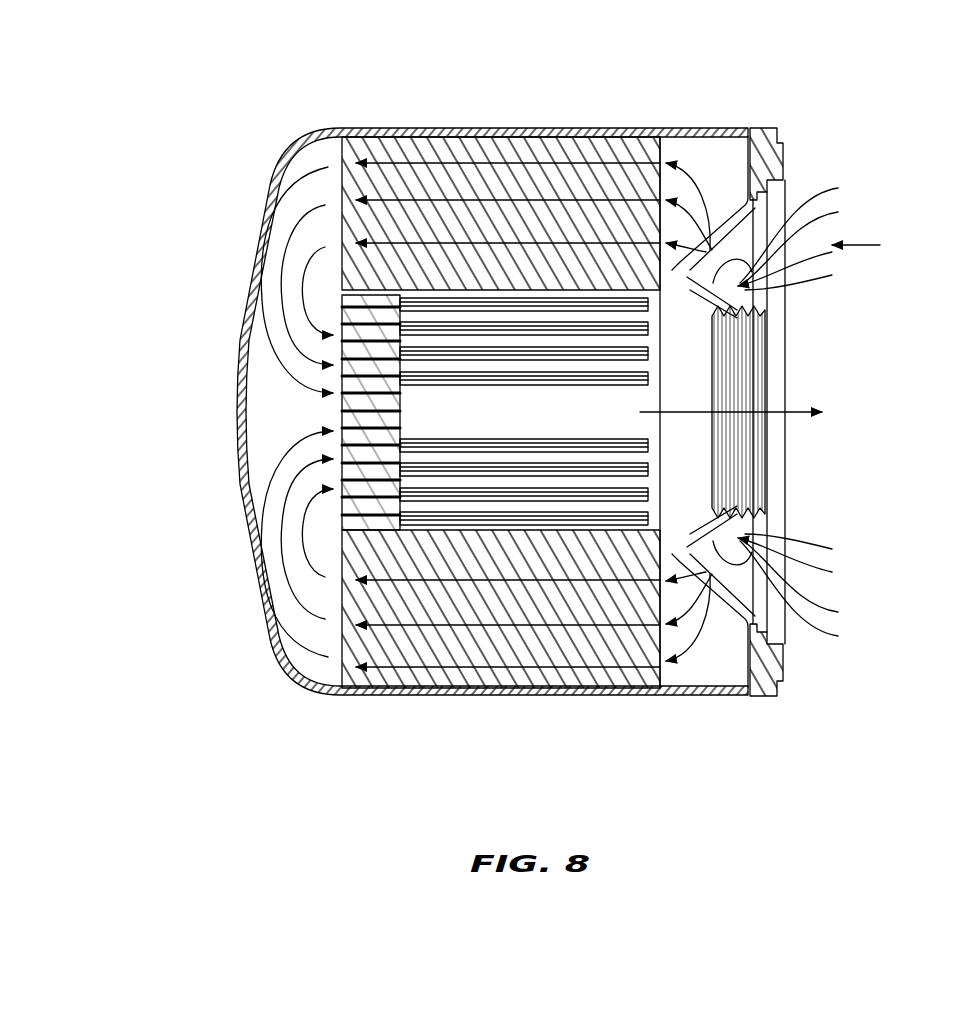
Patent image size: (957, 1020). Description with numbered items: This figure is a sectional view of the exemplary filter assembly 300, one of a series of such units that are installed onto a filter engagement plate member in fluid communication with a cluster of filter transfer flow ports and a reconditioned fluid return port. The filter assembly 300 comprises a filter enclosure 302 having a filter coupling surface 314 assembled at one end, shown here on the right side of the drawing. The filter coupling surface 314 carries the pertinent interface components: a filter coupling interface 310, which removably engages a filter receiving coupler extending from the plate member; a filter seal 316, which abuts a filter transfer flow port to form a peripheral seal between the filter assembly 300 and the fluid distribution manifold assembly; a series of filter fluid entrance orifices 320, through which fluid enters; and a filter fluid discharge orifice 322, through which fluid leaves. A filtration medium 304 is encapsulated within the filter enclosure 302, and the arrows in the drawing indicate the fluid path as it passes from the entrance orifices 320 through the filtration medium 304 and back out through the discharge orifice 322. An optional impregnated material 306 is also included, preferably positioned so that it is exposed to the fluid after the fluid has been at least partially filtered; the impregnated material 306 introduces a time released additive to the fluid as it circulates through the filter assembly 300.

The filter assembly 300 is at (249, 90).
The filter enclosure 302 is at (240, 393).
The filtration medium 304 is at (420, 130).
The impregnated material 306 is at (330, 378).
The filter coupling interface 310 is at (758, 338).
The filter coupling surface 314 is at (800, 372).
The filter seal 316 is at (790, 165).
The filter fluid entrance orifices 320 is at (802, 207).
The filter fluid discharge orifice 322 is at (770, 452).